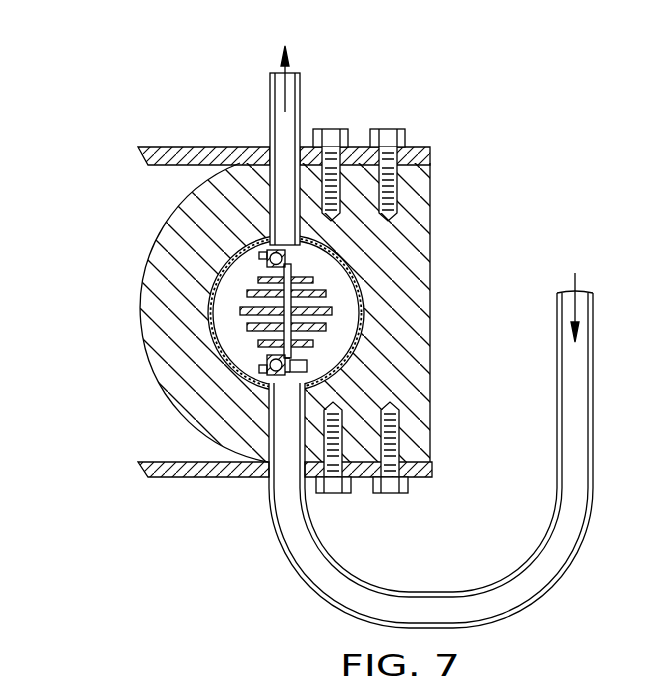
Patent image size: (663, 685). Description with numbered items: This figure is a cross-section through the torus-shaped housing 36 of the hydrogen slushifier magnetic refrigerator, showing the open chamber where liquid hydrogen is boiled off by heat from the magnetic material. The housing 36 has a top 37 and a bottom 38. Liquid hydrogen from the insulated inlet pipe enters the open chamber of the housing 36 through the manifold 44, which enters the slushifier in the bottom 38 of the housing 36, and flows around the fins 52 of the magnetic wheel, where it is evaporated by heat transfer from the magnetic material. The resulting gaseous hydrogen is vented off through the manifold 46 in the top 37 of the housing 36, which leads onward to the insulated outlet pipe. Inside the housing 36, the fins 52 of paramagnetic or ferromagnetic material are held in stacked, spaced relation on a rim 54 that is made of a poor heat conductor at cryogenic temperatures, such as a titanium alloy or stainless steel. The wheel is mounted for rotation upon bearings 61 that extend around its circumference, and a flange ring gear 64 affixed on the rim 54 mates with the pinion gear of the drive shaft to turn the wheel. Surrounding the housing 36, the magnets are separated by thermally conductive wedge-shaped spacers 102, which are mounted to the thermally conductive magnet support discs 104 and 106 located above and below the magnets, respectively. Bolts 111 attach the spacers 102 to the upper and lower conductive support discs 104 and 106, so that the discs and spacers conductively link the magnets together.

The housing 36 is at (212, 297).
The top 37 is at (206, 197).
The bottom 38 is at (266, 456).
The manifold 44 is at (292, 560).
The manifold 46 is at (268, 107).
The fins 52 is at (262, 388).
The rim 54 is at (296, 355).
The bearings 61 is at (286, 257).
The flange ring gear 64 is at (308, 366).
The wedge-shaped spacers 102 is at (140, 322).
The upper magnet support disc 104 is at (198, 147).
The lower magnet support disc 106 is at (192, 478).
The bolts 111 is at (381, 129).